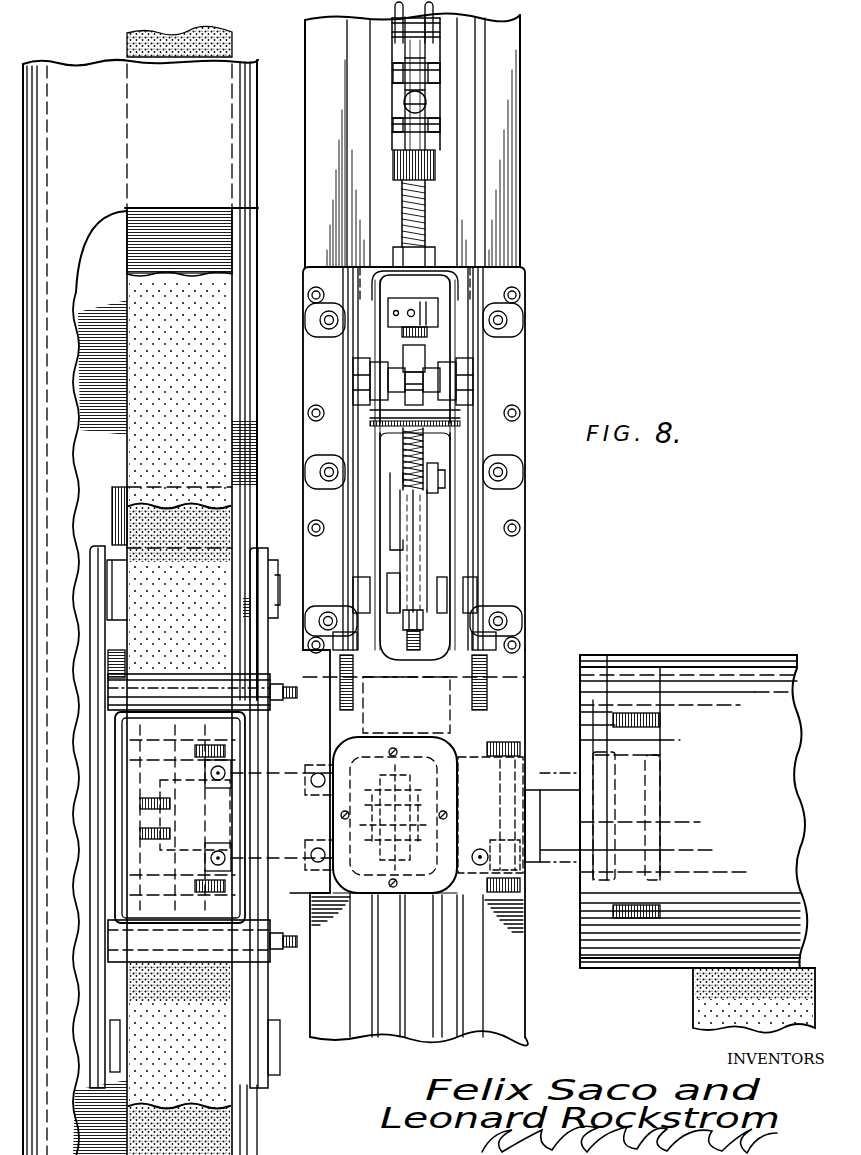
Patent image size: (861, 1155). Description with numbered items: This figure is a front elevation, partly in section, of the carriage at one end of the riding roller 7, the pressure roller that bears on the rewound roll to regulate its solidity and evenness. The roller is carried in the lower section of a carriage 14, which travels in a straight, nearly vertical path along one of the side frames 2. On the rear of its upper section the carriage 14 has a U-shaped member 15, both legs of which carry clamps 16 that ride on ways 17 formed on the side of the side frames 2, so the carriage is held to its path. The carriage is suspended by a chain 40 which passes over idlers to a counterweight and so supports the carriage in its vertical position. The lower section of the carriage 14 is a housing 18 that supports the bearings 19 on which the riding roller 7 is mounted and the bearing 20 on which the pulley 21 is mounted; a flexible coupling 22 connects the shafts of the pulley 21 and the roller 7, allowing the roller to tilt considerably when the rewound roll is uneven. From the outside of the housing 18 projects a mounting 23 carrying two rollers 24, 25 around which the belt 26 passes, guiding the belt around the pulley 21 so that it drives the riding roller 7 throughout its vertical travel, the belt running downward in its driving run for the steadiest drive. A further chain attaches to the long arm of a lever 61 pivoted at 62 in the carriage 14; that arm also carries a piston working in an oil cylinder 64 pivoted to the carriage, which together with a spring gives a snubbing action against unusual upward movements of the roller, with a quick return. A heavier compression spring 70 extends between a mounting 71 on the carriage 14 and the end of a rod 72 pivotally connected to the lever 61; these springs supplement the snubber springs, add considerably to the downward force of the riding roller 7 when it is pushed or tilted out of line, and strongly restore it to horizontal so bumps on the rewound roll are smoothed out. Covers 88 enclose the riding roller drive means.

The covers 88 is at (120, 173).
The belt 26 is at (210, 403).
The roller 24 is at (118, 531).
The mounting 23 is at (263, 557).
The pulley 21 is at (233, 738).
The bearing 20 is at (320, 836).
The roller 25 is at (248, 1143).
The side frames 2 is at (512, 170).
The ways 17 is at (463, 42).
The chains 40 is at (425, 52).
The U-shaped member 15 is at (447, 273).
The clamps 16 is at (475, 277).
The carriages 14 is at (513, 508).
The lever 61 is at (425, 350).
The pivot 62 is at (437, 385).
The mounting 71 is at (433, 423).
The heavier compression spring 70 is at (423, 452).
The cylinder 64 is at (433, 552).
The rod 72 is at (400, 627).
The housing 18 is at (427, 747).
The bearings 19 is at (482, 848).
The flexible coupling 22 is at (383, 867).
The riding roller 7 is at (723, 657).